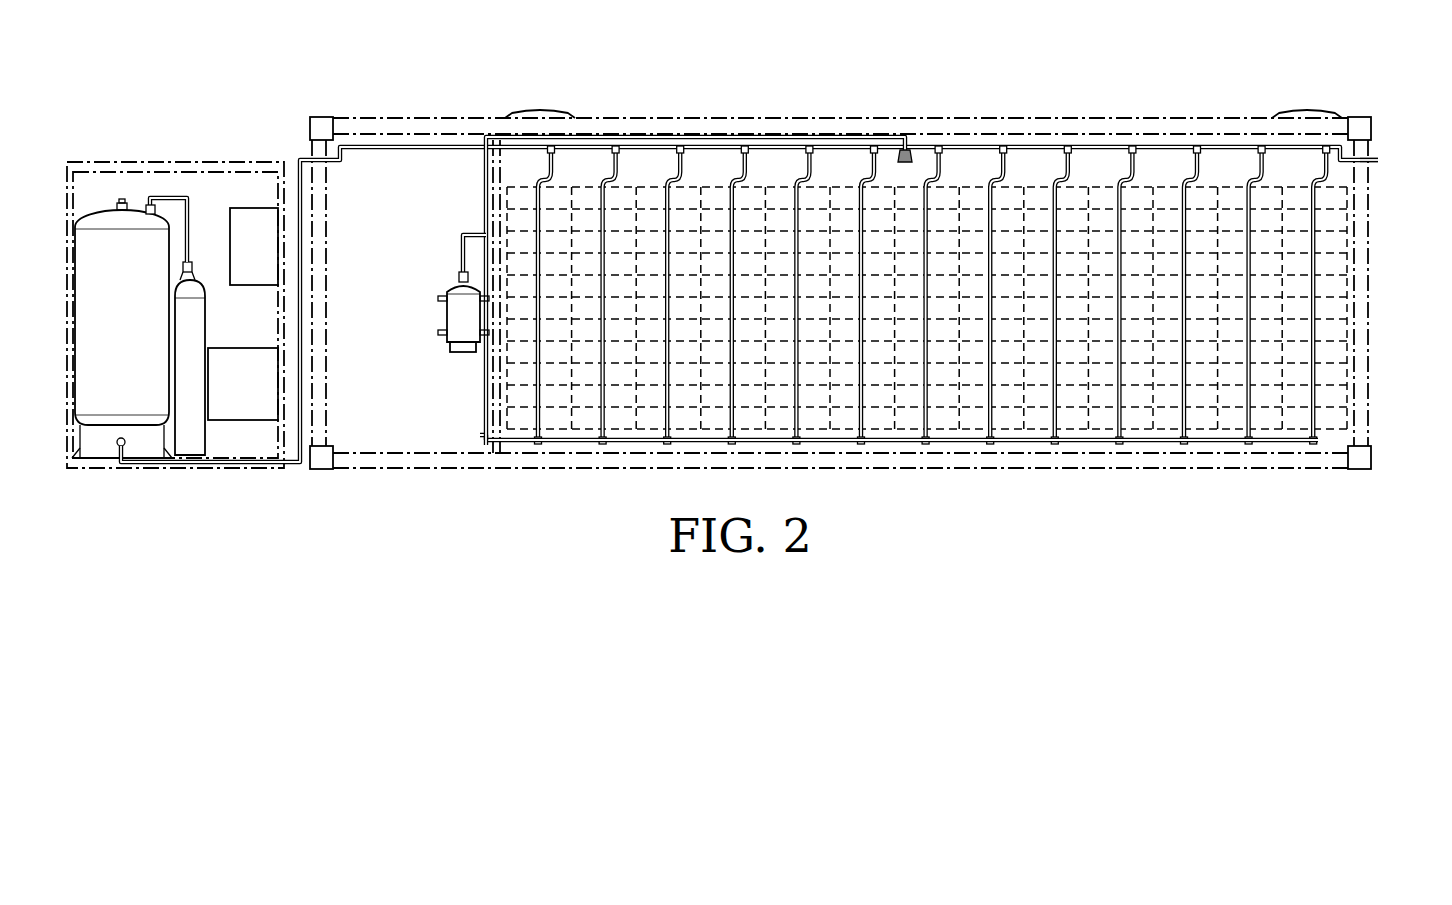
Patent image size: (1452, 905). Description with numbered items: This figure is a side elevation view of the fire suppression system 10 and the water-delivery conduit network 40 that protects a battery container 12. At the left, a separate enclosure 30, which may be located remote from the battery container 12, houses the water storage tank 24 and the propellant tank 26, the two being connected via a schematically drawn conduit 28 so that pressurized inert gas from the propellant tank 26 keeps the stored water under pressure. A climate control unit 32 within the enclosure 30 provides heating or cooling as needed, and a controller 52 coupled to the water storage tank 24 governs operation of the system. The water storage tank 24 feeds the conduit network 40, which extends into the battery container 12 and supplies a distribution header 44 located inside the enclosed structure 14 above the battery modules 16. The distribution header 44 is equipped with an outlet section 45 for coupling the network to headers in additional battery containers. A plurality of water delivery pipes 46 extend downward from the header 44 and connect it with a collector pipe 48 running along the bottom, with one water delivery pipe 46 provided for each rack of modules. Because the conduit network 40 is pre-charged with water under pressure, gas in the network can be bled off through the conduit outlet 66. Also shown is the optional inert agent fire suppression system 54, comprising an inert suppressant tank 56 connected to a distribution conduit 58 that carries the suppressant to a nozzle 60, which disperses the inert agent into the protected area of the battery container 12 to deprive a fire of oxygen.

The fire suppression system 10 is at (231, 108).
The battery container 12 is at (886, 96).
The enclosed structure 14 is at (1182, 462).
The battery modules 16 is at (1015, 200).
The water storage tank 24 is at (133, 328).
The propellant tank 26 is at (205, 435).
The conduit 28 is at (193, 206).
The enclosure 30 is at (105, 162).
The climate control unit 32 is at (253, 399).
The conduit network 40 is at (362, 136).
The distribution header 44 is at (650, 145).
The outlet section 45 is at (1378, 160).
The water delivery pipes 46 is at (1185, 220).
The collector pipe 48 is at (585, 440).
The controller 52 is at (265, 256).
The inert agent fire suppression system 54 is at (444, 365).
The inert suppressant tank 56 is at (452, 313).
The distribution conduit 58 is at (485, 180).
The nozzle 60 is at (905, 157).
The conduit outlet 66 is at (484, 445).